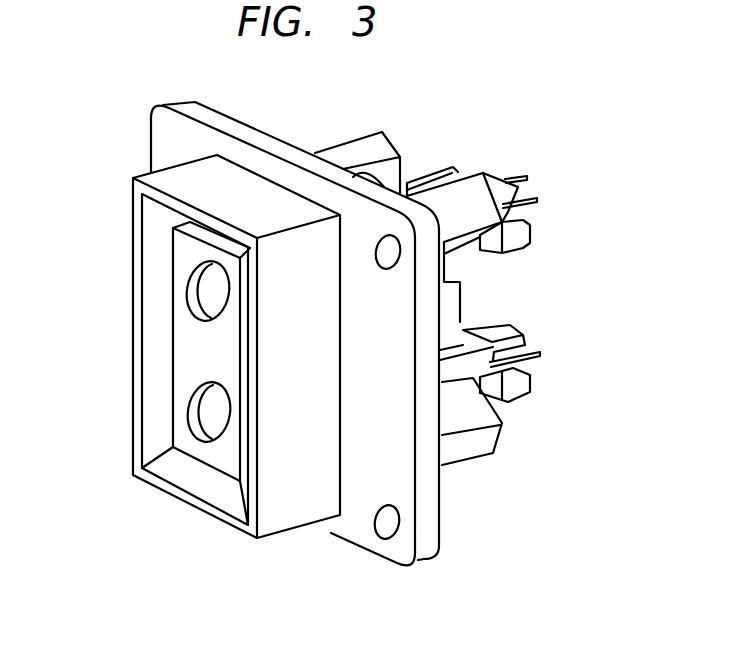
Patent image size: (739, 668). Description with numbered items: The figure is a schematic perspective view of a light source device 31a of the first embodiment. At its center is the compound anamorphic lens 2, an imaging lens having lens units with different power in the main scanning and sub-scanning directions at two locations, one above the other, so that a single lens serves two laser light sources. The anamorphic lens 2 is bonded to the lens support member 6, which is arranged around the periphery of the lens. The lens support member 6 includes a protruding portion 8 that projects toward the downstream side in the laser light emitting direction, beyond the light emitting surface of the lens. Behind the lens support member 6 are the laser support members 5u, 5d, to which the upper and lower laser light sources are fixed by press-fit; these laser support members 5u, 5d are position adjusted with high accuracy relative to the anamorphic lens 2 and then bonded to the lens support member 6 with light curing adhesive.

The compound anamorphic lens 2 is at (185, 347).
The lens support member 6 is at (261, 146).
The protruding portion 8 is at (137, 253).
The laser support member 5u is at (522, 186).
The laser support member 5d is at (527, 376).
The connector (alternatively 31b) 31a is at (341, 346).